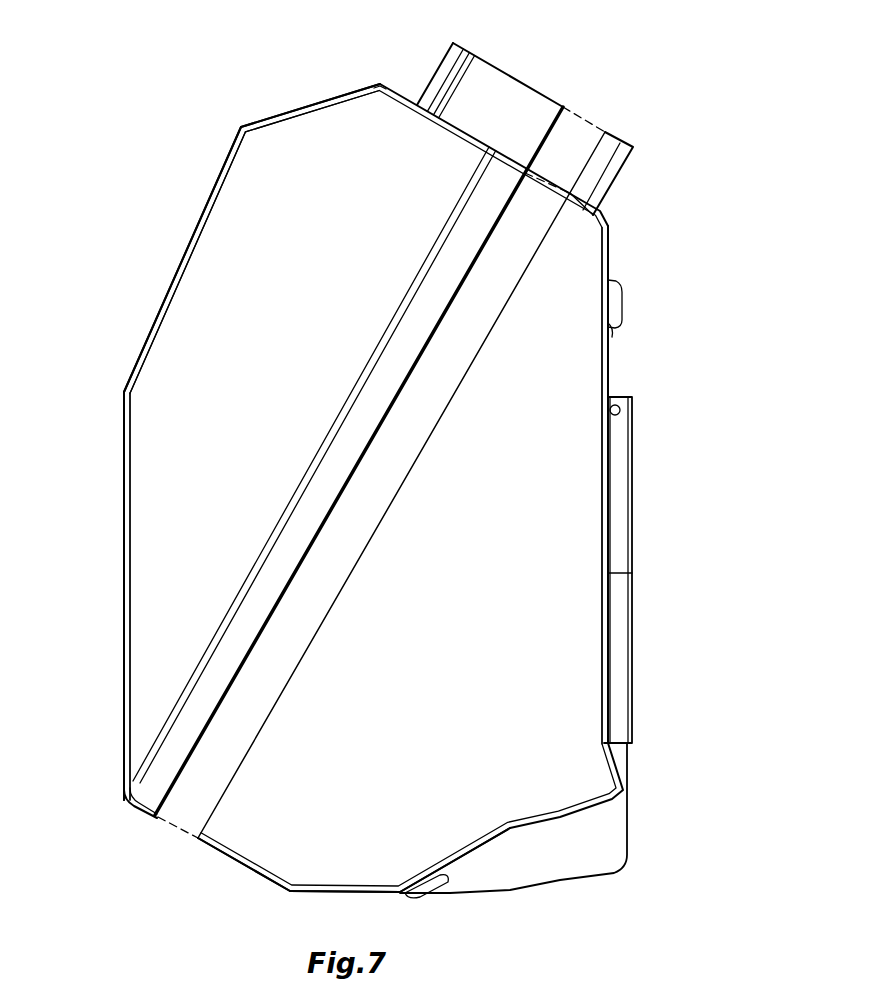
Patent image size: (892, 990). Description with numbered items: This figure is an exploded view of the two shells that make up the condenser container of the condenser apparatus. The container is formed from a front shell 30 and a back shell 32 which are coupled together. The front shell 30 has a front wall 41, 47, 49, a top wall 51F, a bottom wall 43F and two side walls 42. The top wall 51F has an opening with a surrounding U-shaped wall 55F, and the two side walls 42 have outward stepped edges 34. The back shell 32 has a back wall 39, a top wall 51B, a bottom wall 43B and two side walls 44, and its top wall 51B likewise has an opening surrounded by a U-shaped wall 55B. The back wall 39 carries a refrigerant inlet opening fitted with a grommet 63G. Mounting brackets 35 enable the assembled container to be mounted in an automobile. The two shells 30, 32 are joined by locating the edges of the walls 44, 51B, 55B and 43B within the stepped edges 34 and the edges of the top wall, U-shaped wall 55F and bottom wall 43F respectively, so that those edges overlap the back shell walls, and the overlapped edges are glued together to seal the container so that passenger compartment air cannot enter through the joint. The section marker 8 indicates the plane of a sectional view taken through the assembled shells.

The front shell 30 is at (122, 526).
The back shell 32 is at (629, 802).
The outward stepped edges 34 is at (113, 722).
The mounting brackets 35 is at (618, 662).
The back wall 39 is at (610, 365).
The front wall 41 is at (301, 104).
The side walls 42 is at (178, 441).
The bottom wall 43F is at (125, 808).
The bottom wall 43B is at (217, 861).
The side walls 44 is at (315, 843).
The front wall 47 is at (187, 250).
The front wall 49 is at (122, 628).
The top wall 51F is at (403, 83).
The top wall 51B is at (583, 205).
The U-shaped wall 55F is at (444, 58).
The U-shaped wall 55B is at (628, 160).
The grommet 63G is at (623, 286).
The section line of FIG. 8 is at (122, 352).